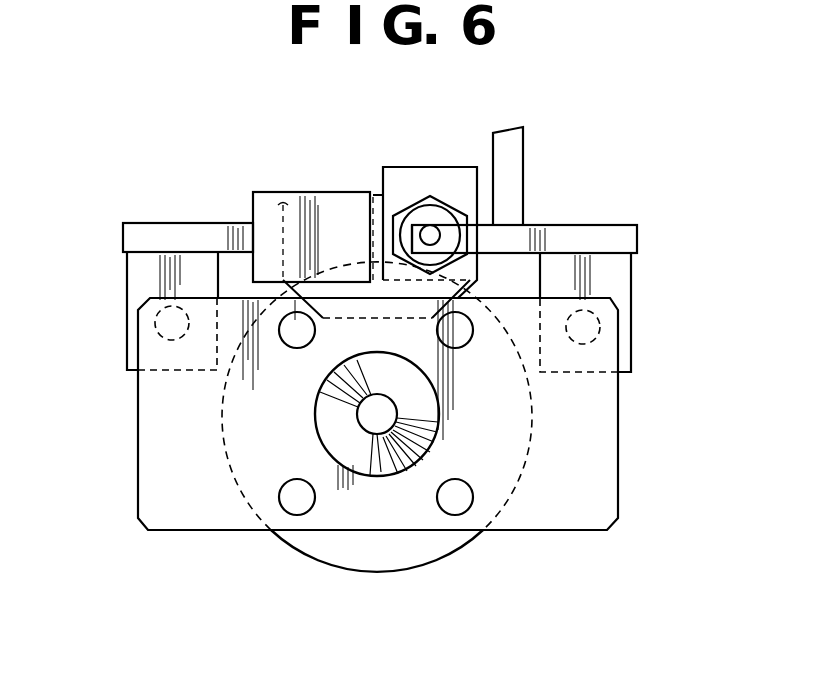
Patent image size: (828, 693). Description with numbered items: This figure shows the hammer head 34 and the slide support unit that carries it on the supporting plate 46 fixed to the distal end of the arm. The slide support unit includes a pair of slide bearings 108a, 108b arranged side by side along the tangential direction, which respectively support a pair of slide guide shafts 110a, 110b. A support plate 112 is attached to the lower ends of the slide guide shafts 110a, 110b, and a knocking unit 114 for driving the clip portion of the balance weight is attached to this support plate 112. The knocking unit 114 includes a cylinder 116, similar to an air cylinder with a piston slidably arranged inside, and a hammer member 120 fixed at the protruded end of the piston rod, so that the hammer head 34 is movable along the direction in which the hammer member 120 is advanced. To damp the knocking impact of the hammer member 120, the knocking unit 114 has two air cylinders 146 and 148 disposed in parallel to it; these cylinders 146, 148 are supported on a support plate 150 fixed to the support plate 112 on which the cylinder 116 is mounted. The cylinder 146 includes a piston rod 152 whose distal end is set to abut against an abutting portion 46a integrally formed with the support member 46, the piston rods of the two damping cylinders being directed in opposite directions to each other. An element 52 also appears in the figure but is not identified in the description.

The hammer head 34 is at (643, 199).
The supporting plate 46 is at (180, 228).
The abutting portion 46a is at (410, 236).
The post 52 is at (525, 160).
The slide bearing 108a is at (126, 277).
The slide bearing 108b is at (638, 282).
The slide guide shaft 110a is at (157, 322).
The slide guide shaft 110b is at (595, 330).
The support plate 112 is at (155, 508).
The knocking unit 114 is at (300, 563).
The cylinder 116 is at (442, 537).
The hammer member 120 is at (398, 418).
The air cylinder 146 is at (448, 175).
The air cylinder 148 is at (287, 203).
The support plate 150 is at (283, 232).
The piston rod 152 is at (428, 233).